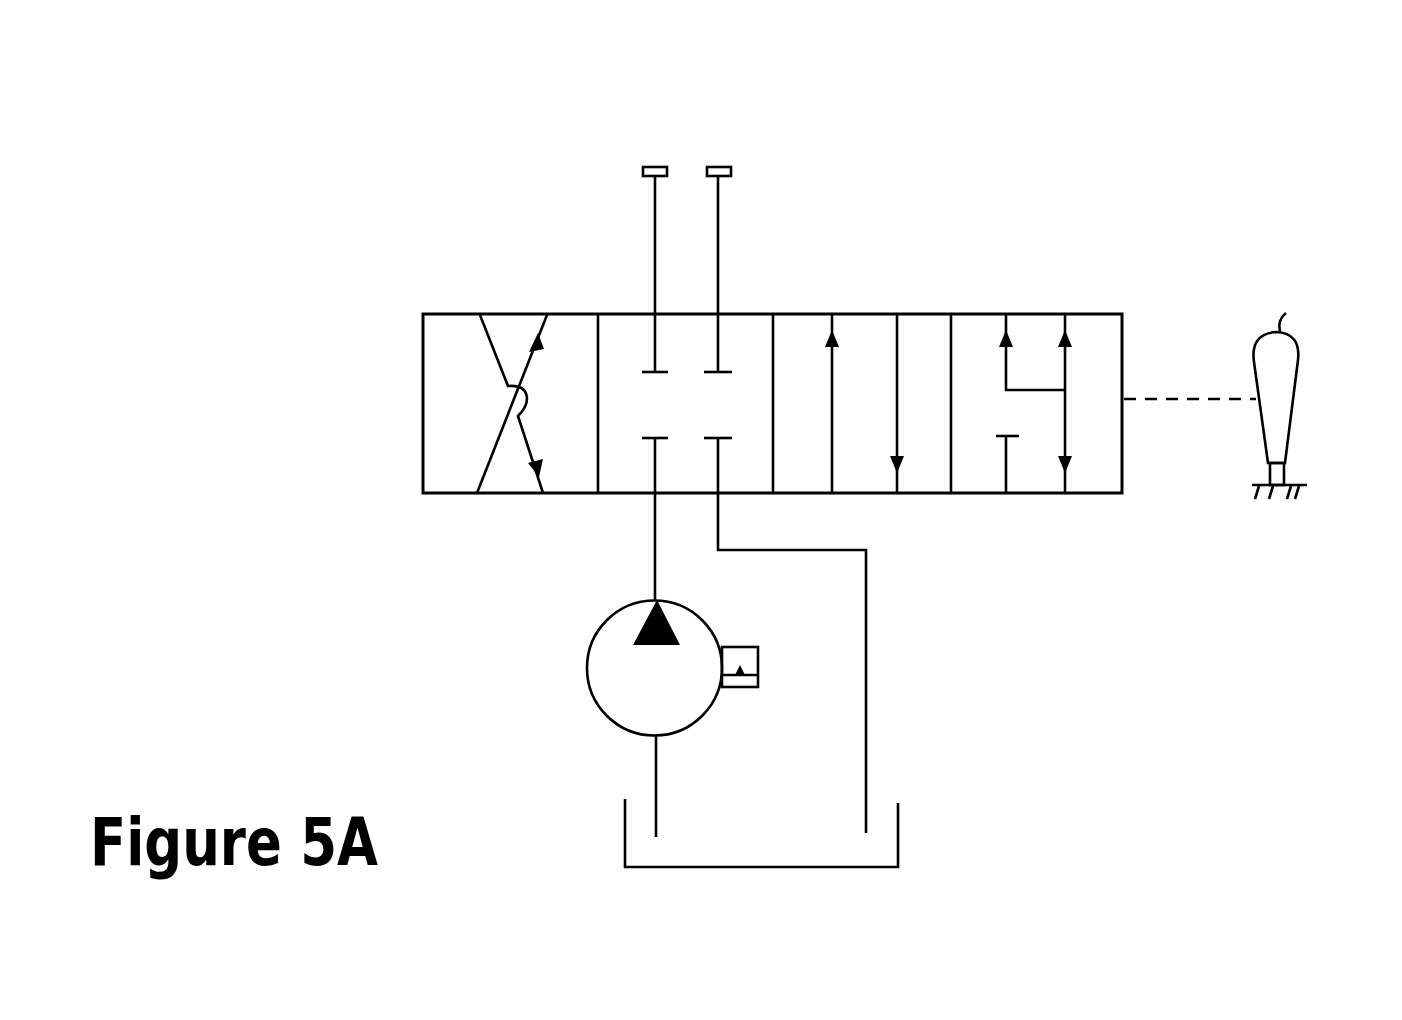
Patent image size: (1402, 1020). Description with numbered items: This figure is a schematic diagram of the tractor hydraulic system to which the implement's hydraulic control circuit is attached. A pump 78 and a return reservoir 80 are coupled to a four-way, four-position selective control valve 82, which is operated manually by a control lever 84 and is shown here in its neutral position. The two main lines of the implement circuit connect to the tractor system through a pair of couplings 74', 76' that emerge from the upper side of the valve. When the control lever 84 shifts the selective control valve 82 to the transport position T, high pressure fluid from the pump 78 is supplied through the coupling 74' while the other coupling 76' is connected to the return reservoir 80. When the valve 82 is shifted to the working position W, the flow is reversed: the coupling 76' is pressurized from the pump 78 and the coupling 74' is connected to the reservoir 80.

The coupling 74' is at (605, 178).
The coupling 76' is at (779, 198).
The pump 78 is at (587, 672).
The return reservoir 80 is at (898, 837).
The selective control valve 82 is at (1087, 495).
The control lever 84 is at (1297, 388).
The working position W is at (513, 312).
The transport position T is at (870, 312).